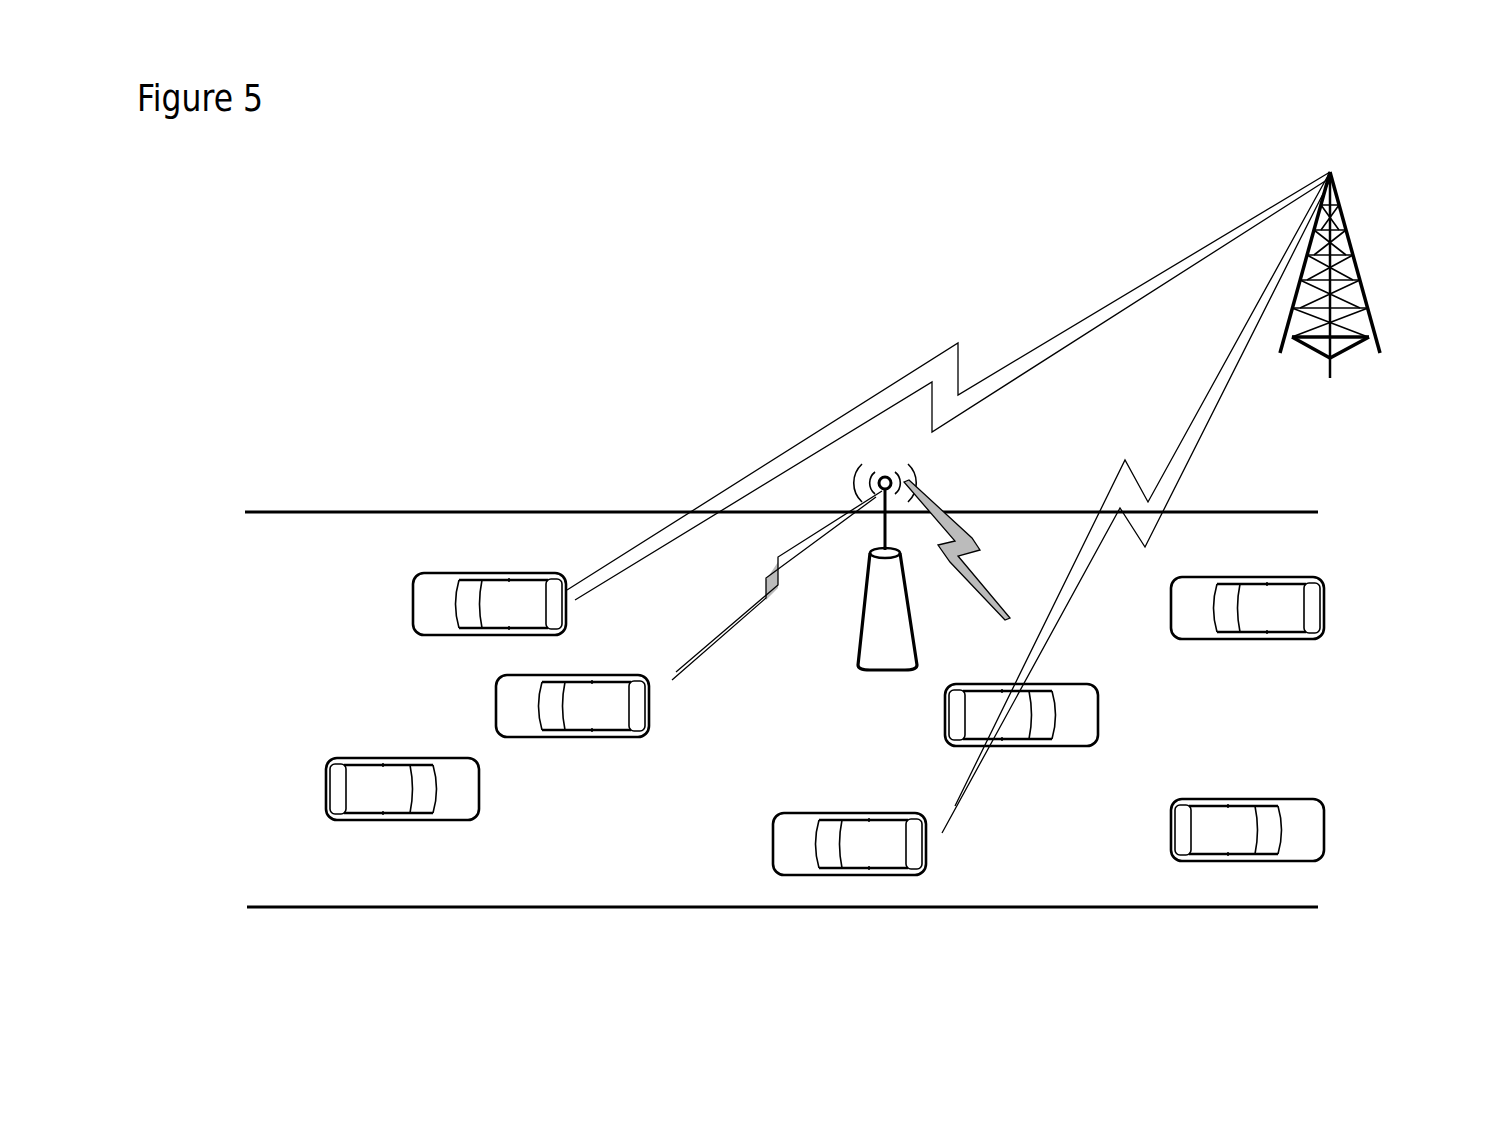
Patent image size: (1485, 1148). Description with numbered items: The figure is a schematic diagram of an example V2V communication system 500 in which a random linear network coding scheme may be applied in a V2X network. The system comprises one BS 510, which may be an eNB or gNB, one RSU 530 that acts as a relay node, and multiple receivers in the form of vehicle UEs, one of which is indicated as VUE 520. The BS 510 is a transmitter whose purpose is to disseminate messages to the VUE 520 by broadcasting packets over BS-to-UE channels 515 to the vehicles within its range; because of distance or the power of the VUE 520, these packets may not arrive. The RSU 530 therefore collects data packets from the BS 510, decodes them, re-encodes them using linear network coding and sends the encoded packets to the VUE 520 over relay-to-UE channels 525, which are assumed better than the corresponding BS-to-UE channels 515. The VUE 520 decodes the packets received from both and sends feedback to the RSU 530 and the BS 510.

The V2V communication system 500 is at (703, 272).
The BS 510 is at (1340, 237).
The BS-to-UE channel 515 is at (1062, 330).
The vehicle UE 520 is at (492, 713).
The relay-to-UE channel 525 is at (724, 612).
The RSU 530 is at (863, 641).